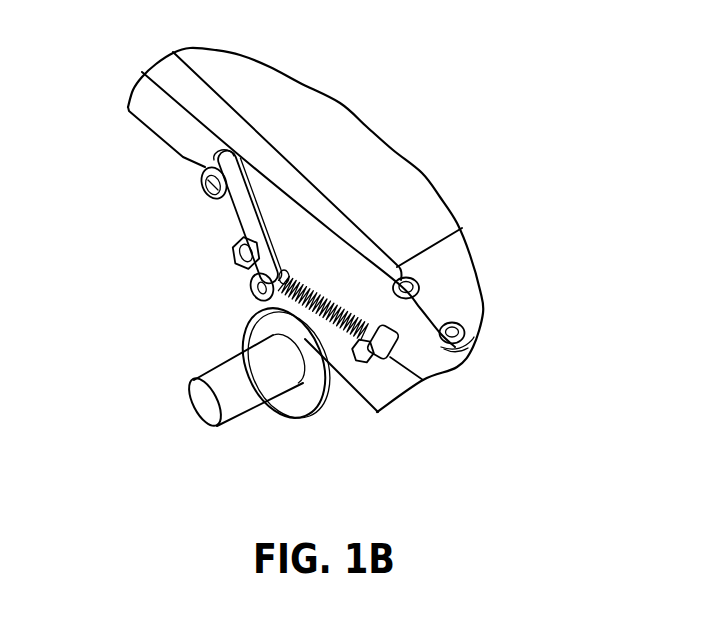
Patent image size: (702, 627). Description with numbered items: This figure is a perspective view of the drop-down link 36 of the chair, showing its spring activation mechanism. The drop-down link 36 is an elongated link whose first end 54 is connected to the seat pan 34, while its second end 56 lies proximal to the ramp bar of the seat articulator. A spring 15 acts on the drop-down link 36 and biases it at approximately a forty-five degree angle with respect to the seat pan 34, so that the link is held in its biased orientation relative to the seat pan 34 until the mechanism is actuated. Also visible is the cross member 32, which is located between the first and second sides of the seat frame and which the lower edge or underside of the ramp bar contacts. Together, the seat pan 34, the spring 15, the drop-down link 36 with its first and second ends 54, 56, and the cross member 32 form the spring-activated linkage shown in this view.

The seat pan 34 is at (326, 148).
The spring 15 is at (323, 297).
The first end 54 is at (200, 167).
The drop-down link 36 is at (233, 222).
The second end 56 is at (250, 297).
The cross member 32 is at (217, 373).